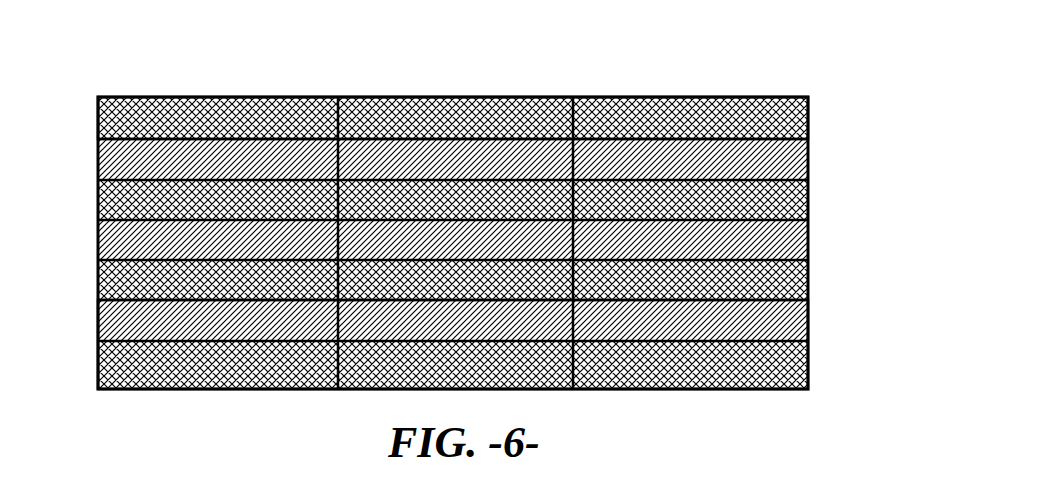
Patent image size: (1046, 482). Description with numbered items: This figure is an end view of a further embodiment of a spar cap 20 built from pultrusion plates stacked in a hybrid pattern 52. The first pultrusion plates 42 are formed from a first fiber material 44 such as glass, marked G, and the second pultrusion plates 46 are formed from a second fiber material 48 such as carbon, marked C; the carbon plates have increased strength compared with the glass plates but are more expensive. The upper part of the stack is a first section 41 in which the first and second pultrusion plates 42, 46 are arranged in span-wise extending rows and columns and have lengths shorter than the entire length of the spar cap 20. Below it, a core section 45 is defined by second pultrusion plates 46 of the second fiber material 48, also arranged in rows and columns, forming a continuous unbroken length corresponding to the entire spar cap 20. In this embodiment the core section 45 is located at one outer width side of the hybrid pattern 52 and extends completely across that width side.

The spar cap 20 is at (826, 144).
The first section 41 is at (92, 123).
The first pultrusion plates 42 is at (810, 281).
The first fiber material 44 is at (800, 198).
The core section 45 is at (97, 322).
The second pultrusion plates 46 is at (810, 322).
The second fiber material 48 is at (797, 360).
The hybrid pattern 52 is at (675, 70).